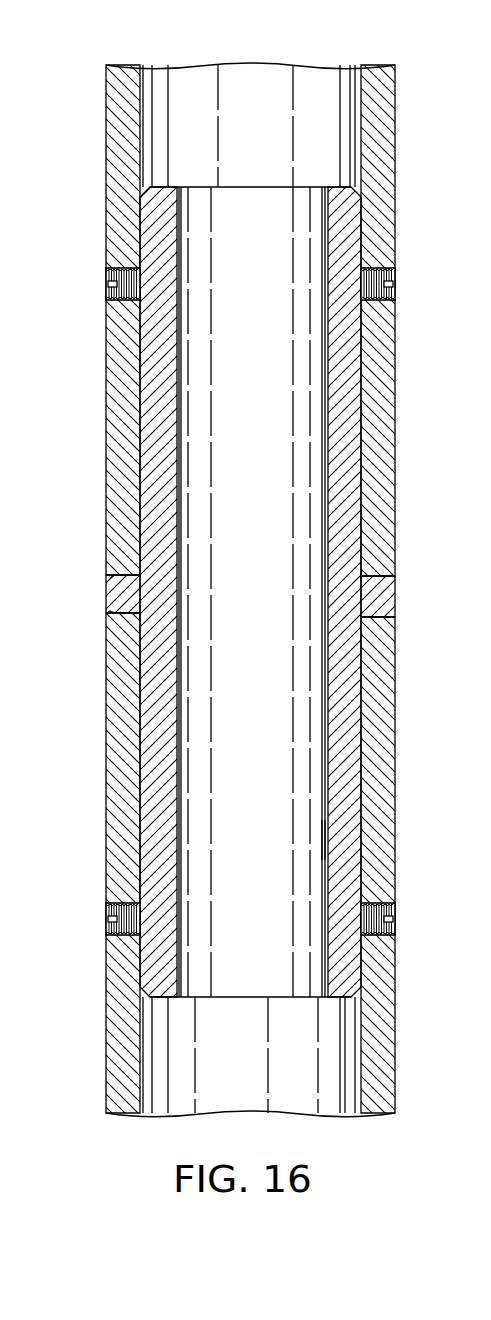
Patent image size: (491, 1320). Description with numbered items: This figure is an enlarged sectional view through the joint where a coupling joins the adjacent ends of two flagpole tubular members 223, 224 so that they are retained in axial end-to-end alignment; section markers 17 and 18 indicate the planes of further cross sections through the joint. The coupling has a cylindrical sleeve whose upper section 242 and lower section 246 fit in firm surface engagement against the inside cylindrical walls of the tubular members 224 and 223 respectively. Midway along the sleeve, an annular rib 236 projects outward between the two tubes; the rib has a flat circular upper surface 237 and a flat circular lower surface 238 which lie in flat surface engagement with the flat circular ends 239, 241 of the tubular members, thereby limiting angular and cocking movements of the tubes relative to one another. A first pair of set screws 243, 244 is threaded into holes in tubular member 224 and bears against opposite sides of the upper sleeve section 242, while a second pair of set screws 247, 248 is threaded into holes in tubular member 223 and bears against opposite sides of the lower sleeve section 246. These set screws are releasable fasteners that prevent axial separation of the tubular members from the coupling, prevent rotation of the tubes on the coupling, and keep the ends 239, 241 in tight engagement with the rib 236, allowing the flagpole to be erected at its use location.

The section line 17- 17 is at (100, 108).
The section line 18- 18 is at (97, 575).
The tubular member 223 is at (385, 796).
The tubular member 224 is at (384, 440).
The annular rib 236 is at (390, 598).
The upper surface of annular rib 237 is at (110, 579).
The lower surface of annular rib 238 is at (108, 612).
The flat circular end of tubular member 239 is at (372, 567).
The flat circular end of tubular member 241 is at (375, 620).
The upper section of sleeve 242 is at (343, 390).
The set screw 243 is at (397, 277).
The set screw 244 is at (108, 292).
The lower section of sleeve 246 is at (338, 842).
The set screw 247 is at (396, 912).
The set screw 248 is at (108, 912).